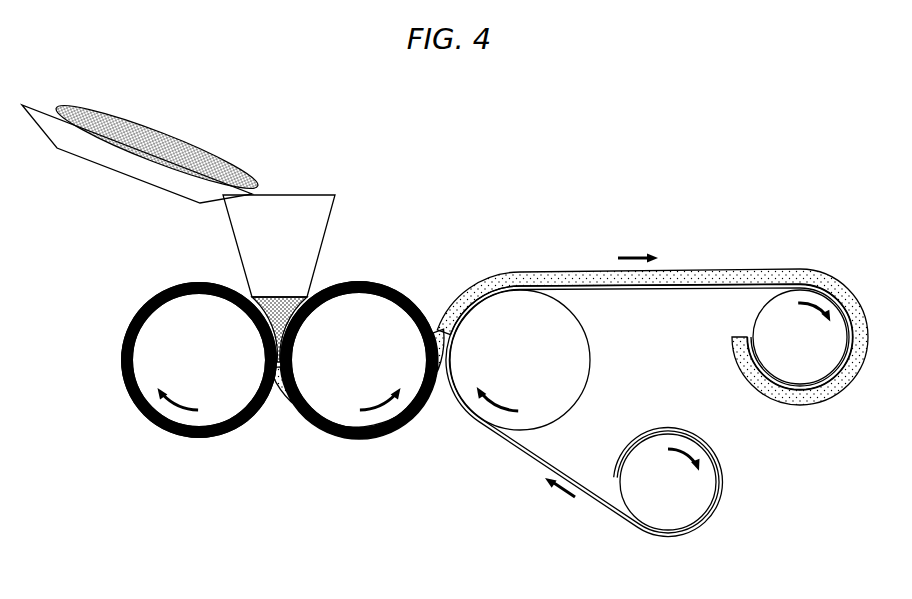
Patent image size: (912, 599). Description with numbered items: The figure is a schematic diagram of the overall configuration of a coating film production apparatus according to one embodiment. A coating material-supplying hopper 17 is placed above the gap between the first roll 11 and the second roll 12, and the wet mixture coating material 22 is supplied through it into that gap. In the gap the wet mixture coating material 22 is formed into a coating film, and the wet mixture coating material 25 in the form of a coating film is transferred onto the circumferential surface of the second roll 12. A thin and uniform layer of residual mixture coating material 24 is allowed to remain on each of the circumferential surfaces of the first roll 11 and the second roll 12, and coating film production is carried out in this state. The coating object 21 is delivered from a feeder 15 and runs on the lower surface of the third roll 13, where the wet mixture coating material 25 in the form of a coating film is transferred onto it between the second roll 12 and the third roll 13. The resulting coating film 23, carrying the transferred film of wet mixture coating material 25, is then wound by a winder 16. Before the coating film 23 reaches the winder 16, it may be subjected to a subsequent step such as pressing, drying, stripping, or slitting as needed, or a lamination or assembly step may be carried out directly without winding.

The first roll 11 is at (158, 320).
The second roll 12 is at (400, 320).
The third roll 13 is at (568, 380).
The feeder 15 is at (688, 512).
The winder 16 is at (830, 362).
The coating material-supplying hopper 17 is at (278, 208).
The coating object 21 is at (598, 503).
The wet mixture coating material 22 is at (157, 145).
The coating film 23 is at (477, 287).
The residual mixture coating material 24 is at (360, 282).
The wet mixture coating material in the form of a coating film 25 is at (358, 448).